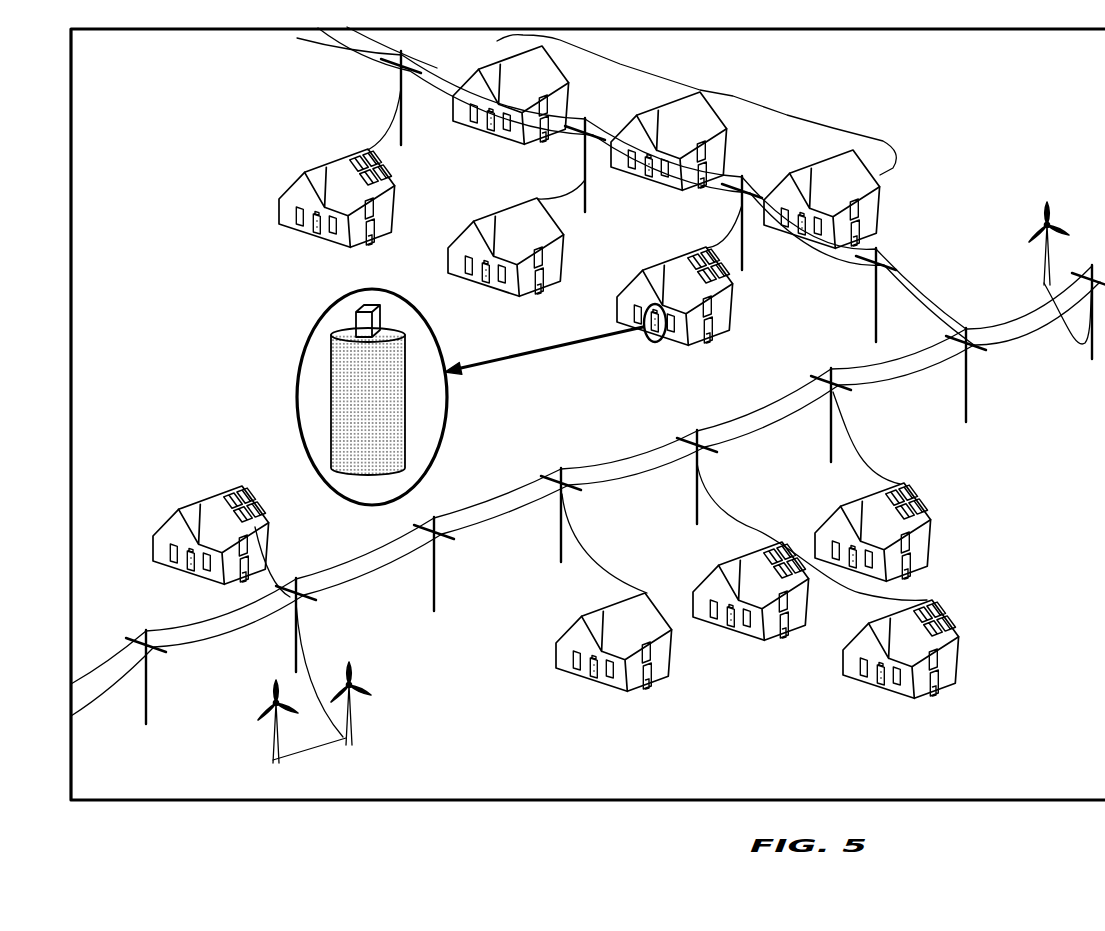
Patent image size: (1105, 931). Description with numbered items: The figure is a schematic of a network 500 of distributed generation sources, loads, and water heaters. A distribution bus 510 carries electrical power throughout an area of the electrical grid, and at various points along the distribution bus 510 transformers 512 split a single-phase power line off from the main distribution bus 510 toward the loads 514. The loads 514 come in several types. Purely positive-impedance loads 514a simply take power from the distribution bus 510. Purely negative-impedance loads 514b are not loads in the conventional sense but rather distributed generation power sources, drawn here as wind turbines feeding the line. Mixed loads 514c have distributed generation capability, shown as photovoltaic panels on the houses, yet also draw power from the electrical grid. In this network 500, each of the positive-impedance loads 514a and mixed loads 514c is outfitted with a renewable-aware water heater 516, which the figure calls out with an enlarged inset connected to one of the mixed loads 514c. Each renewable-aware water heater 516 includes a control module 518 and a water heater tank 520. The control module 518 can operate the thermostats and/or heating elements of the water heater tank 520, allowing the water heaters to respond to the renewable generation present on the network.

The network 500 is at (997, 101).
The distribution bus 510 is at (517, 497).
The transformers 512 is at (563, 495).
The loads 514 is at (731, 93).
The positive-impedance loads 514a is at (868, 170).
The negative-impedance loads 514b is at (372, 727).
The mixed loads 514c is at (733, 325).
The renewable-aware water heater 516 is at (278, 400).
The control module 518 is at (380, 317).
The water heater tank 520 is at (405, 418).